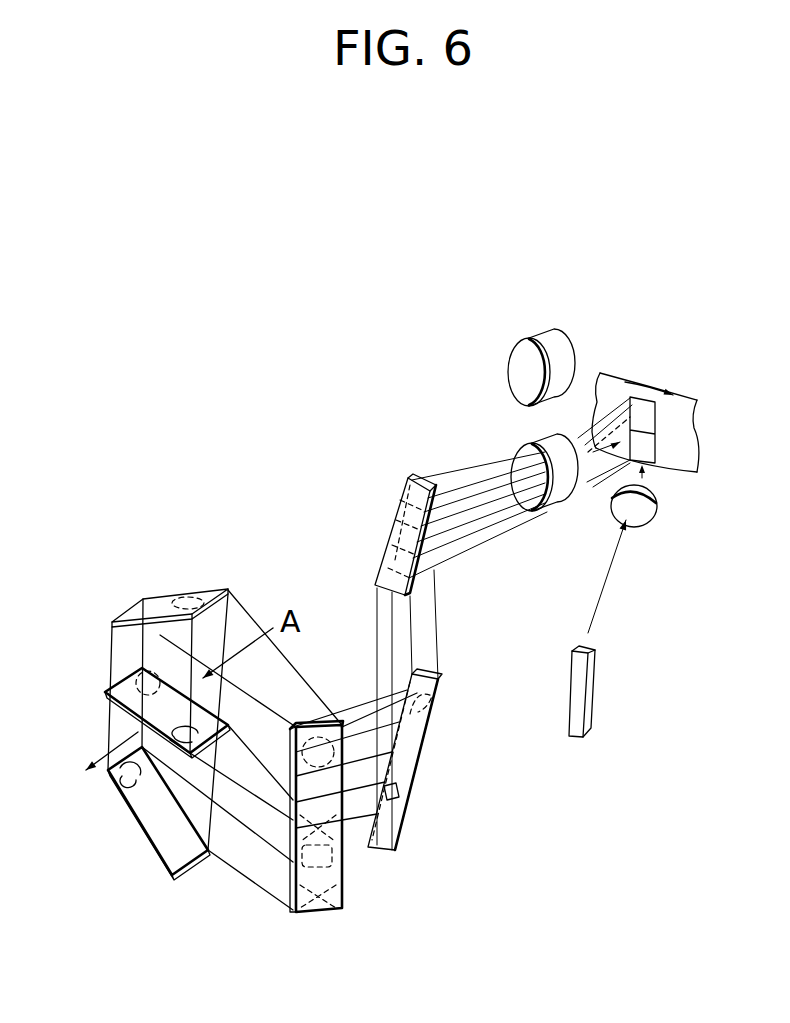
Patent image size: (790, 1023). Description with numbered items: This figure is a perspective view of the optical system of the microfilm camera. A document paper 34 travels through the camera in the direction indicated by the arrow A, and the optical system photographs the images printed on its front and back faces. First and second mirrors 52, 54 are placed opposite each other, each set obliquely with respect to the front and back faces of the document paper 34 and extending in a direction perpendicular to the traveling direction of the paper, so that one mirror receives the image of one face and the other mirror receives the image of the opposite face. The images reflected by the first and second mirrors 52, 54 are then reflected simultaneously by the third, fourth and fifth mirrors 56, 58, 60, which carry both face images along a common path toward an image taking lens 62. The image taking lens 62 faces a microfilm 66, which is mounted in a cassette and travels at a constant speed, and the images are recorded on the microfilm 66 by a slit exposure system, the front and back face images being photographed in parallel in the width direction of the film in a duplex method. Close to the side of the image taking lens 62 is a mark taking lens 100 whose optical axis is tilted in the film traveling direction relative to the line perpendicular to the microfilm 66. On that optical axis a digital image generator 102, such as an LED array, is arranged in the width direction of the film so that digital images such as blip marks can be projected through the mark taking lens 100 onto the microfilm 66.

The document paper 34 is at (105, 694).
The first mirror 52 is at (160, 598).
The second mirror 54 is at (128, 806).
The third mirror 56 is at (298, 913).
The fourth mirror 58 is at (407, 820).
The fifth mirror 60 is at (388, 518).
The image taking lens 62 is at (523, 340).
The microfilm 66 is at (600, 373).
The mark taking lens 100 is at (647, 525).
The digital image generator 102 is at (593, 720).